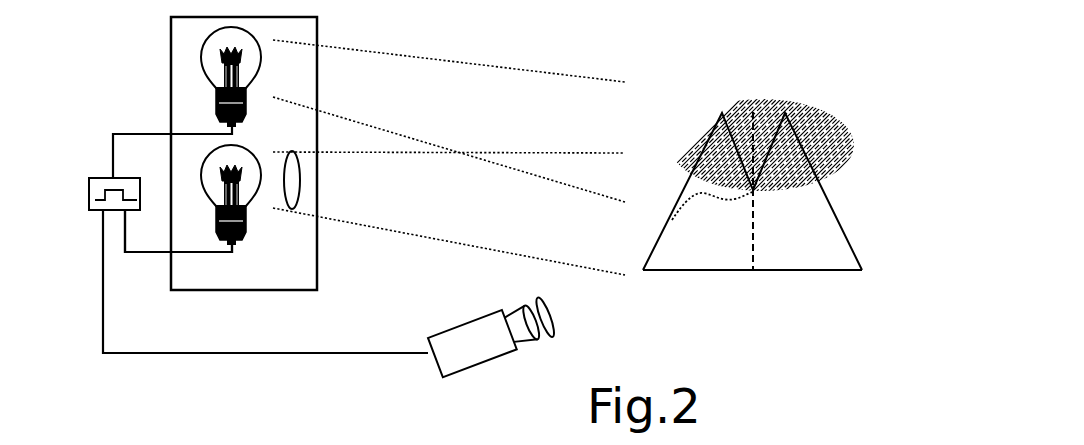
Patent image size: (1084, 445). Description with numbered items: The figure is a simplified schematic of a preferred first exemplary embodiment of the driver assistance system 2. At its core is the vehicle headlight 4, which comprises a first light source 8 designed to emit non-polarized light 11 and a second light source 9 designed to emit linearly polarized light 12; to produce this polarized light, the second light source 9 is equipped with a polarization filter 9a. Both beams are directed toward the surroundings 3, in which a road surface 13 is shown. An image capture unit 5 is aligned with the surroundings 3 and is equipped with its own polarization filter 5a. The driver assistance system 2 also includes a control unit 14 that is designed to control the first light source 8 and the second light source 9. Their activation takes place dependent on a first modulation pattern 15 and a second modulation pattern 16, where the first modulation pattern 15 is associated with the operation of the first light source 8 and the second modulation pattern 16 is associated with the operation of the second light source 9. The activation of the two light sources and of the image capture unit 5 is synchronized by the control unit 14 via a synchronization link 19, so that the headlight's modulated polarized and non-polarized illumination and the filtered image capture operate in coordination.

The driver assistance system 2 is at (120, 82).
The surroundings 3 is at (677, 75).
The vehicle headlight 4 is at (237, 278).
The image capture unit 5 is at (485, 353).
The polarization filter 5a is at (557, 320).
The first light source 8 is at (247, 85).
The second light source 9 is at (247, 201).
The polarization filter 9a is at (302, 178).
The non-polarized light 11 is at (429, 112).
The linearly polarized light 12 is at (429, 214).
The road surface 13 is at (787, 250).
The control unit 14 is at (100, 182).
The first modulation pattern 15 is at (83, 213).
The second modulation pattern 16 is at (178, 231).
The synchronization link 19 is at (247, 355).